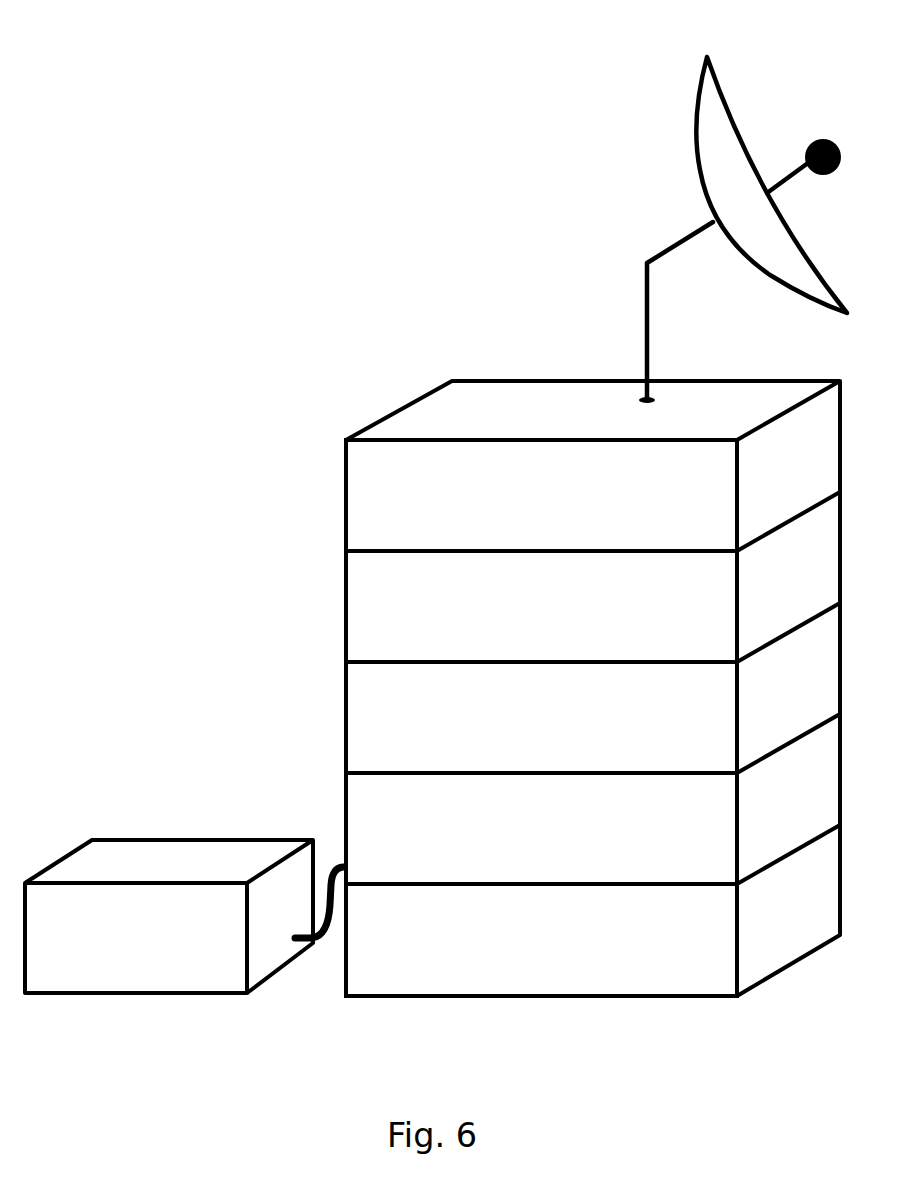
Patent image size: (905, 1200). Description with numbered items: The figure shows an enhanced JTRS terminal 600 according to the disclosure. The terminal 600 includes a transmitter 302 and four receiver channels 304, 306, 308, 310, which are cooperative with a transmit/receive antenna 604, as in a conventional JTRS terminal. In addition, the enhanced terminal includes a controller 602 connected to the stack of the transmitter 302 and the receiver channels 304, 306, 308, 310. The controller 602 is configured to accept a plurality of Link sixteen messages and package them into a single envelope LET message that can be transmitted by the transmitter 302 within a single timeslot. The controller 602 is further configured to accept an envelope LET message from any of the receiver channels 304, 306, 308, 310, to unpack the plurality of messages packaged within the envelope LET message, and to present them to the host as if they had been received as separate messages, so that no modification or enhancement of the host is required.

The enhanced JTRS terminal 600 is at (220, 270).
The transmitter 302 is at (428, 508).
The receiver channel 304 is at (428, 613).
The receiver channel 306 is at (428, 747).
The receiver channel 308 is at (428, 843).
The receiver channel 310 is at (428, 962).
The controller 602 is at (160, 943).
The transmit/receive antenna 604 is at (697, 167).